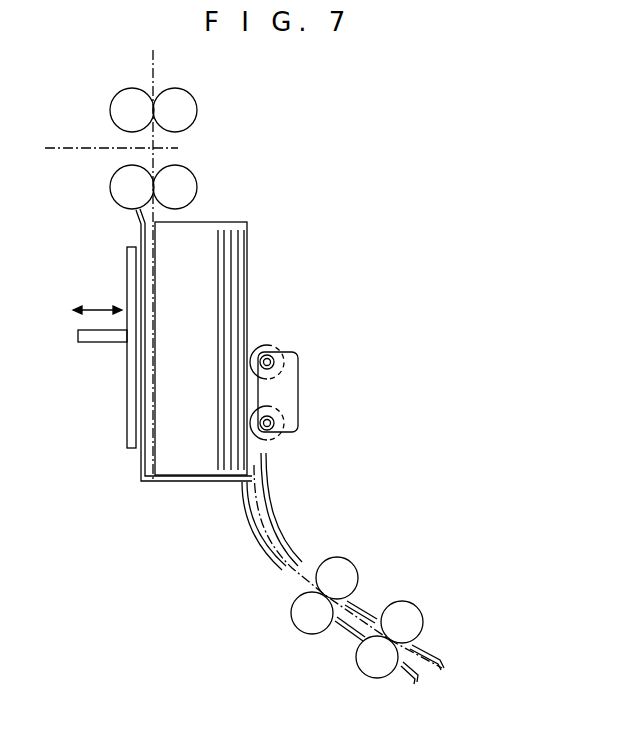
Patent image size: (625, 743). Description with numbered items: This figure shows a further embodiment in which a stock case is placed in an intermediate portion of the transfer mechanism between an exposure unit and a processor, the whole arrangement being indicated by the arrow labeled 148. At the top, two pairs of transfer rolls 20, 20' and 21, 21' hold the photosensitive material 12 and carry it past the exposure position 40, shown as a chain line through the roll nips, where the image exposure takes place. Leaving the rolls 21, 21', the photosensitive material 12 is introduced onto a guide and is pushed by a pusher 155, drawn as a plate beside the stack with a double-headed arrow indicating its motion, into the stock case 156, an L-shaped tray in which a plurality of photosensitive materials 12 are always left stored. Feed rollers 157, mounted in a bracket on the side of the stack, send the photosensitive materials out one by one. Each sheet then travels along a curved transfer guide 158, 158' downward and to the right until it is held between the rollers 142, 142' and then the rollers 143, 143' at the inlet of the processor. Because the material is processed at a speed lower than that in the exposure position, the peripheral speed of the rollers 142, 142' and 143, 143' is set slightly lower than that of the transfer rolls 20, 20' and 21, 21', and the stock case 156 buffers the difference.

The transfer roll 20 is at (103, 110).
The transfer roll 20' is at (202, 110).
The transfer roll 21 is at (103, 187).
The transfer roll 21' is at (202, 187).
The exposure position 40 is at (178, 148).
The photosensitive material 12 is at (247, 266).
The sheet stacking and feeding device 148 is at (312, 234).
The pusher 155 is at (127, 373).
The stock case 156 is at (195, 465).
The feed rollers 157 is at (268, 346).
The transfer guide 158 is at (324, 574).
The transfer guide 158' is at (303, 509).
The roller 142 is at (285, 617).
The roller 142' is at (366, 565).
The roller 143 is at (350, 662).
The roller 143' is at (427, 607).